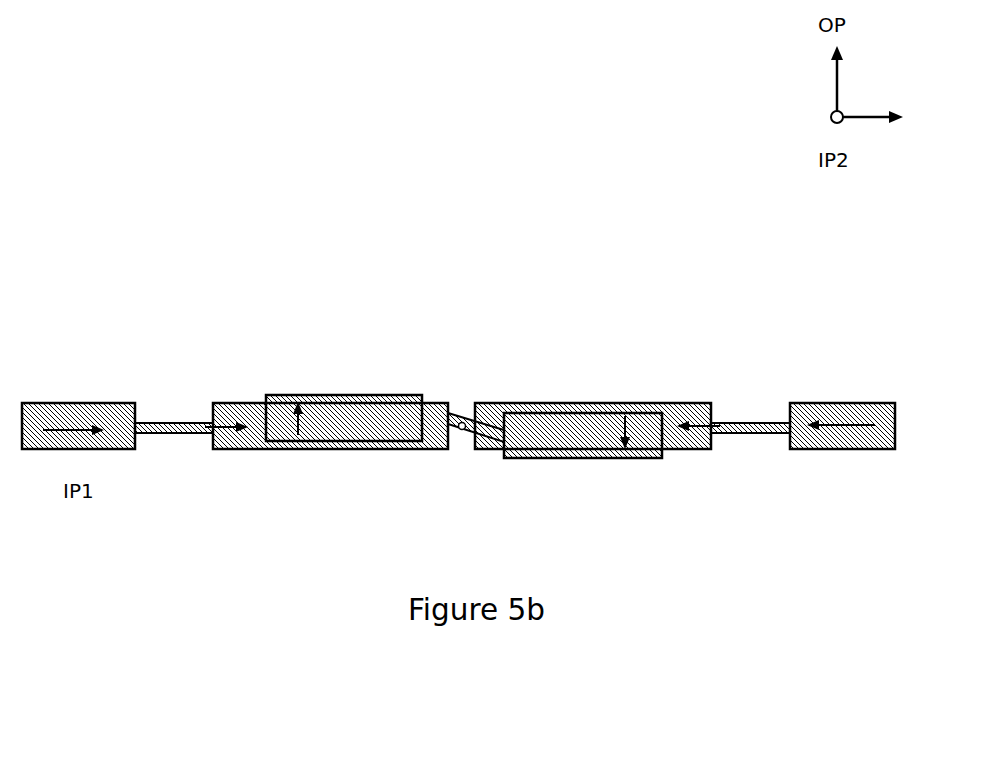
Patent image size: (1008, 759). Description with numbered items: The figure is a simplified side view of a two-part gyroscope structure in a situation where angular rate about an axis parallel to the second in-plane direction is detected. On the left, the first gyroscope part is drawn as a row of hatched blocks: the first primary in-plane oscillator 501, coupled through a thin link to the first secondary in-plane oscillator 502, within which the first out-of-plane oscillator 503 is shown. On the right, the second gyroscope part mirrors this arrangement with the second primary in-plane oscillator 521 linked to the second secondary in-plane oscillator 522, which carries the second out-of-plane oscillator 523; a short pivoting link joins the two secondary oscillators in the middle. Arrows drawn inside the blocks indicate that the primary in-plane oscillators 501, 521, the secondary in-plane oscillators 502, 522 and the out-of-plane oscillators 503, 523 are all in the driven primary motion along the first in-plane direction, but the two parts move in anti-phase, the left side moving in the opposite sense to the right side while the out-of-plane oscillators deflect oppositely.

The first primary in-plane oscillator 501 is at (84, 412).
The first secondary in-plane oscillator 502 is at (234, 412).
The first out-of-plane oscillator 503 is at (343, 418).
The second primary in-plane oscillator 521 is at (845, 413).
The second secondary in-plane oscillator 522 is at (686, 406).
The second out-of-plane oscillator 523 is at (608, 435).